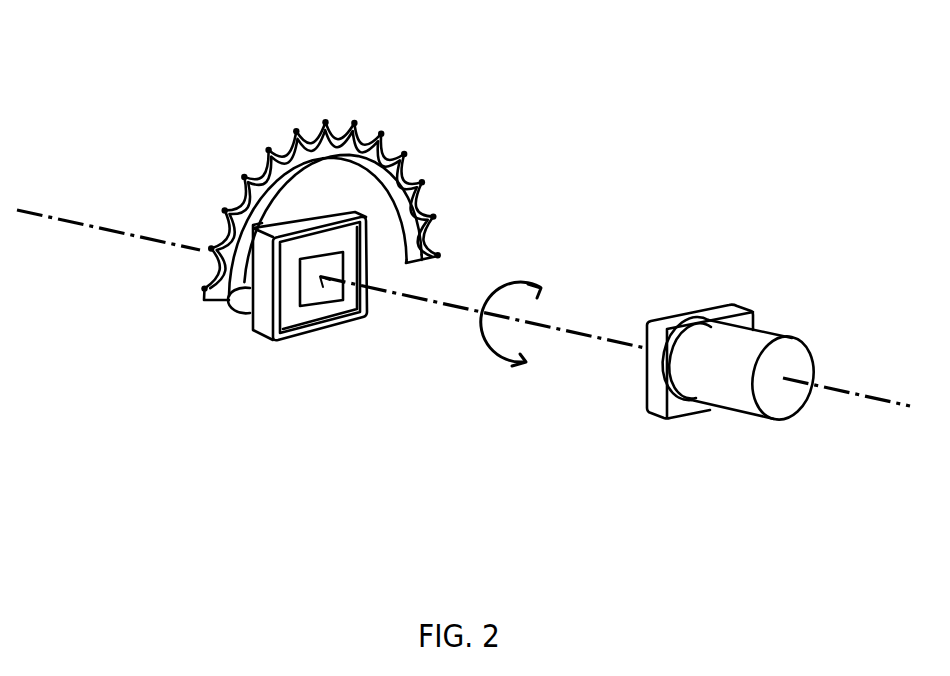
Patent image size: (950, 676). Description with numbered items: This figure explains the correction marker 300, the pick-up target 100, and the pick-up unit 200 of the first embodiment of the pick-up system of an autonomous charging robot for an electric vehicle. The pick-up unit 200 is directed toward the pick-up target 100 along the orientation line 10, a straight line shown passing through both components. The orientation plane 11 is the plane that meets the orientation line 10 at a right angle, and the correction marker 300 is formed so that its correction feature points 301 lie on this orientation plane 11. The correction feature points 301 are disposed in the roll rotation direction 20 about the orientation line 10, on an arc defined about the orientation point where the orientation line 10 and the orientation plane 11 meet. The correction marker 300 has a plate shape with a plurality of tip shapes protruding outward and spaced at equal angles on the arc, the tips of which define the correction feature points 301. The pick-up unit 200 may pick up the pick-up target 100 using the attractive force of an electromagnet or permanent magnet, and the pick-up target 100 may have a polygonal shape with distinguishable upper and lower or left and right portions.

The orientation line 10 is at (113, 227).
The orientation plane 11 is at (337, 300).
The roll rotation direction 20 is at (513, 277).
The pick-up target 100 is at (308, 352).
The pick-up unit 200 is at (725, 440).
The correction marker 300 is at (290, 122).
The correction feature points 301 is at (387, 128).